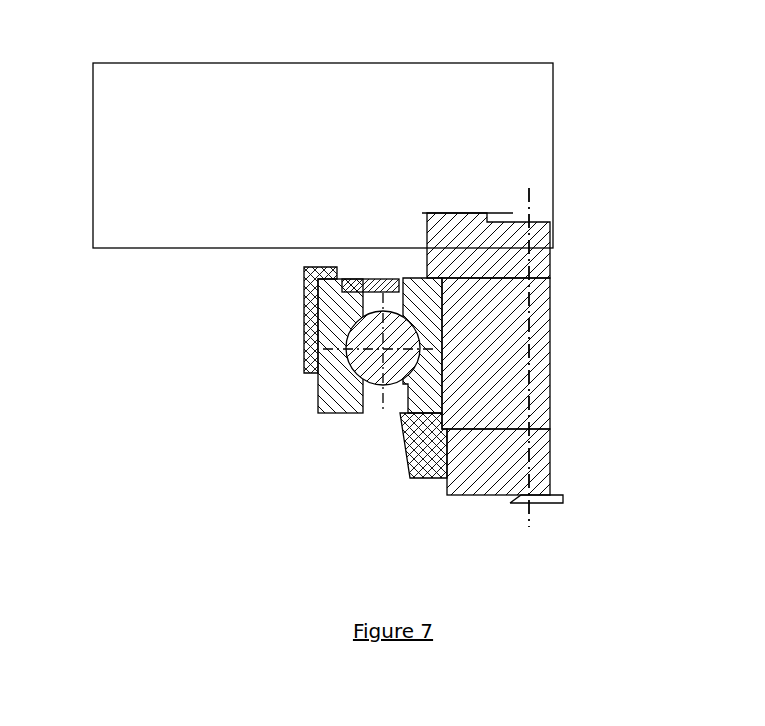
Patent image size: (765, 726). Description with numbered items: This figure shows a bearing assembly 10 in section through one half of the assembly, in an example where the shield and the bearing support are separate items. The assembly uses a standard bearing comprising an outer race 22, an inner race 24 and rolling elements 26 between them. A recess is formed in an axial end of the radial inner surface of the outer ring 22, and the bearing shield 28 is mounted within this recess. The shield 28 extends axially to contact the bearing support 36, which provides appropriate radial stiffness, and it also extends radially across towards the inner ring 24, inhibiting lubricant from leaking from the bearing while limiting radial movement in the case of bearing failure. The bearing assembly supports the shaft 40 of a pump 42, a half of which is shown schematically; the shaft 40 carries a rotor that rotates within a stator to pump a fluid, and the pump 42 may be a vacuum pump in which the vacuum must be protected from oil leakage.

The bearing assembly 10 is at (365, 375).
The outer race 22 is at (337, 402).
The inner race 24 is at (409, 389).
The rolling elements 26 is at (366, 362).
The bearing shield 28 is at (373, 262).
The bearing support 36 is at (305, 301).
The shaft 40 is at (484, 220).
The pump 42 is at (543, 108).